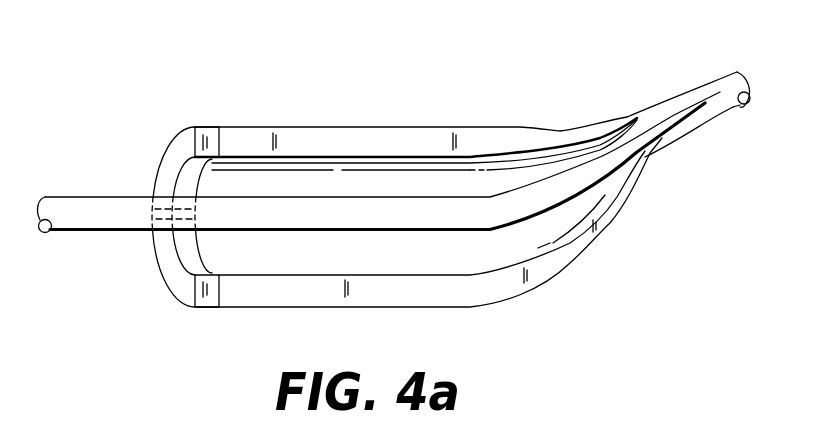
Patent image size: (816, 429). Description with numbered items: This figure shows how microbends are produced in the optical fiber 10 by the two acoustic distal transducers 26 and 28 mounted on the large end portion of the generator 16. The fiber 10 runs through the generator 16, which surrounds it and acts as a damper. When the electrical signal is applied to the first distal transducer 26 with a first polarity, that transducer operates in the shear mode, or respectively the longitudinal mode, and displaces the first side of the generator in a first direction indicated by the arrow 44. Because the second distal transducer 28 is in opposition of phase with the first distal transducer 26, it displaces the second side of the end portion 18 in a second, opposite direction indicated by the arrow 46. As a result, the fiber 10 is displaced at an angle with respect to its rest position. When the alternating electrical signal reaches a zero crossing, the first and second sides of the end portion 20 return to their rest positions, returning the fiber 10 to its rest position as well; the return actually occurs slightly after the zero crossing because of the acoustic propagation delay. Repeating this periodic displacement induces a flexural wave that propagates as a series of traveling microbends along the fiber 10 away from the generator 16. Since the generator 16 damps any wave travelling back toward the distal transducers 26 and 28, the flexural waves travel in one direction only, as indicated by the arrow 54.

The optical fiber 10 is at (80, 203).
The generator 16 is at (337, 128).
The end portion 18 is at (567, 127).
The end portion 20 is at (617, 210).
The first distal transducer 26 is at (213, 137).
The second distal transducer 28 is at (210, 297).
The arrow 44 is at (555, 65).
The arrow 46 is at (616, 302).
The arrow 54 is at (745, 52).